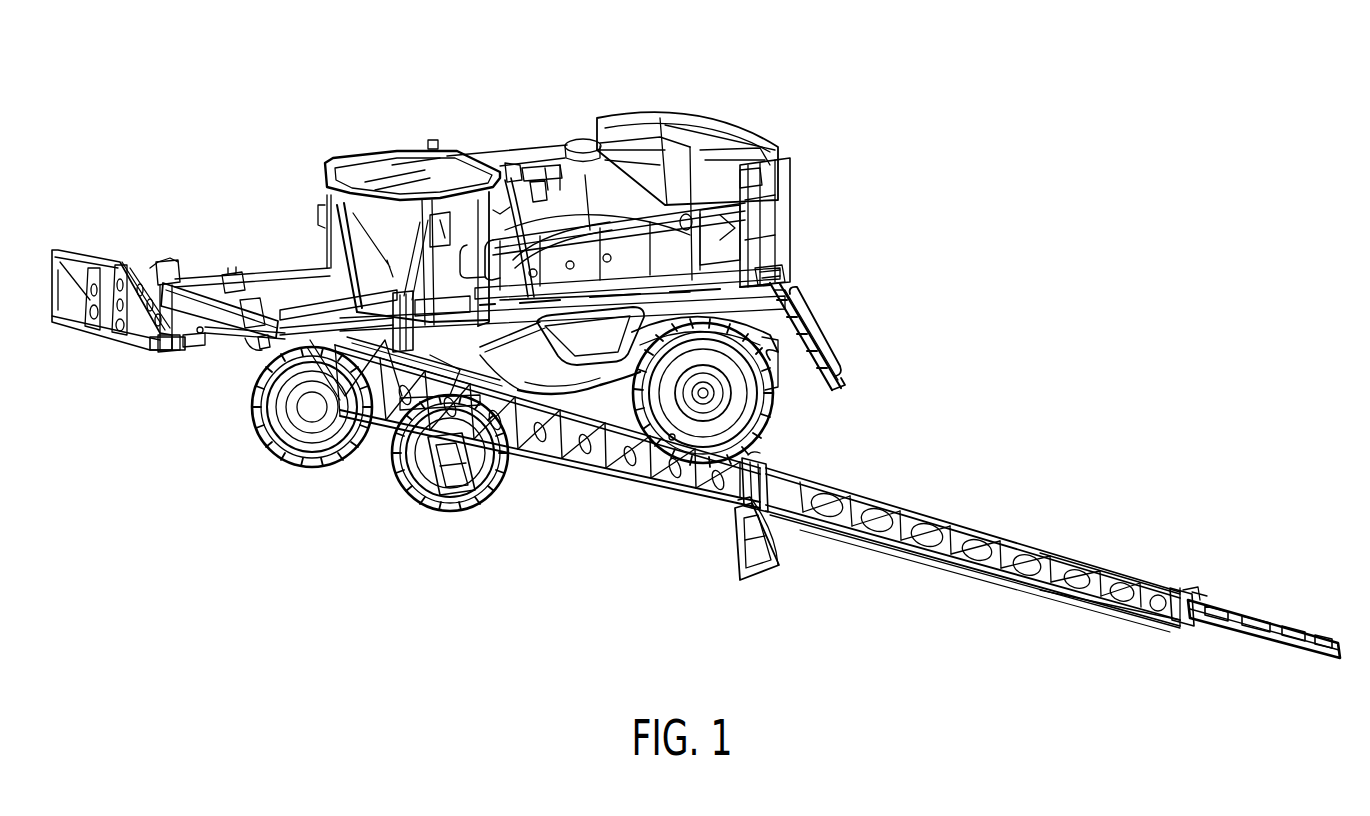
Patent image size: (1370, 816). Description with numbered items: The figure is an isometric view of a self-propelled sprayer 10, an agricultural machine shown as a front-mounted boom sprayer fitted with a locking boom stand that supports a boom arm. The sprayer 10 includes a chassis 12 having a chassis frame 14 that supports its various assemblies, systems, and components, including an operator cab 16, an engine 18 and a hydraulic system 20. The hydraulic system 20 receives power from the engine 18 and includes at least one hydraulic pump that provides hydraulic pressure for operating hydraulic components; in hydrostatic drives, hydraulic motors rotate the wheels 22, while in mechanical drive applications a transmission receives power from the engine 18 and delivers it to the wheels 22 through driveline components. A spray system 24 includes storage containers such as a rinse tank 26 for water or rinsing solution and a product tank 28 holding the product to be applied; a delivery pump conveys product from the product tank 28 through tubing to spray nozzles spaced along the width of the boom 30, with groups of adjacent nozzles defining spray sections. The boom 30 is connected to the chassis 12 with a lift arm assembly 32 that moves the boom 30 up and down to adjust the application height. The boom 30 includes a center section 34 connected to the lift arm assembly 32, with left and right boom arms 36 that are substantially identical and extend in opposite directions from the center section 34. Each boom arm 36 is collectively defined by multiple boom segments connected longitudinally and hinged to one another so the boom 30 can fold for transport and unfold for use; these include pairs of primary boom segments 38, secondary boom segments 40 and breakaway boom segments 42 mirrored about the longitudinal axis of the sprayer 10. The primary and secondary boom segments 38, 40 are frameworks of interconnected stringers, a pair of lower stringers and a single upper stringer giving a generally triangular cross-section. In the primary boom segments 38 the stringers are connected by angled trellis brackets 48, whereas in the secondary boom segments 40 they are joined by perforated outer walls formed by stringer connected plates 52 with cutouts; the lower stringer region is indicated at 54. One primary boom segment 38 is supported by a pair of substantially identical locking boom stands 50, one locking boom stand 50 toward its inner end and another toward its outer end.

The self-propelled sprayer 10 is at (468, 124).
The chassis 12 is at (760, 296).
The chassis frame 14 is at (782, 278).
The operator cab 16 is at (398, 190).
The engine 18 is at (683, 105).
The hydraulic system 20 is at (720, 224).
The wheels 22 is at (733, 403).
The spray system 24 is at (540, 106).
The rinse tank 26 is at (603, 243).
The product tank 28 is at (577, 183).
The boom 30 is at (216, 356).
The lift arm assembly 32 is at (186, 358).
The center section 34 is at (233, 347).
The boom arm 36 is at (95, 238).
The primary boom segment 38 is at (572, 482).
The secondary boom segment 40 is at (893, 554).
The boom tip section 42 is at (1234, 654).
The angled trellis brackets 48 is at (730, 478).
The locking boom stand 50 is at (424, 506).
The stringer connected plates 52 is at (924, 522).
The boom lower beam 54 is at (950, 562).